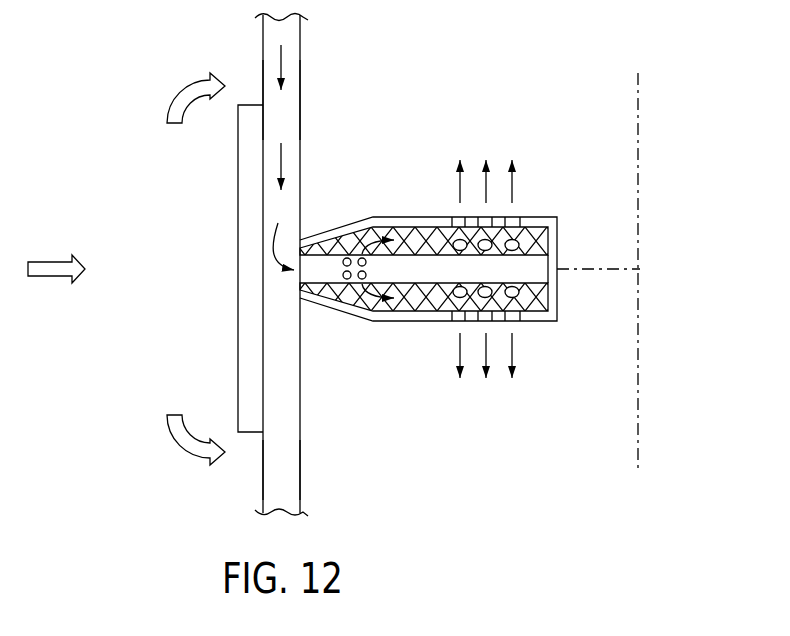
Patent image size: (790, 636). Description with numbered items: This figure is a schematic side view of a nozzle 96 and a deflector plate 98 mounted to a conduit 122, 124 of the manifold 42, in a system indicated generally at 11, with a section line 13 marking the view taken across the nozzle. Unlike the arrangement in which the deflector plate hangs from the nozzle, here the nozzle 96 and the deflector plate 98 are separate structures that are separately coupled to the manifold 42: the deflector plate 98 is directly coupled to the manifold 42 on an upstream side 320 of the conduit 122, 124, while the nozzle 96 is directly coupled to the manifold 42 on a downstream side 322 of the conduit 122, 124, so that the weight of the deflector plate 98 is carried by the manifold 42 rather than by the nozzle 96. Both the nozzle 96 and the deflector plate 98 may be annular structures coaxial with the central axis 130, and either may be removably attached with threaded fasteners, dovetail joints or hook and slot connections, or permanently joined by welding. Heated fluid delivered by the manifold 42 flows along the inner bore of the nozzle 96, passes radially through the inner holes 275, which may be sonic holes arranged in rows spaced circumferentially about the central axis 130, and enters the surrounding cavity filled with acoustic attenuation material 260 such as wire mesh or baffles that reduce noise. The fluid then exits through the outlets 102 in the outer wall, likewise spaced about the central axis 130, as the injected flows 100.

The fluid treatment system 11 is at (172, 44).
The section line 13 is at (638, 73).
The manifold 42 is at (302, 54).
The nozzle 96 is at (341, 208).
The deflector plate 98 is at (238, 226).
The injected flows 100 is at (514, 186).
The outlets 102 is at (514, 224).
The conduit 122 is at (300, 101).
The conduit 124 is at (350, 100).
The central axis 130 is at (592, 269).
The acoustic attenuation material 260 is at (407, 297).
The inner holes 275 is at (356, 283).
The upstream side 320 is at (263, 476).
The downstream side 322 is at (300, 468).